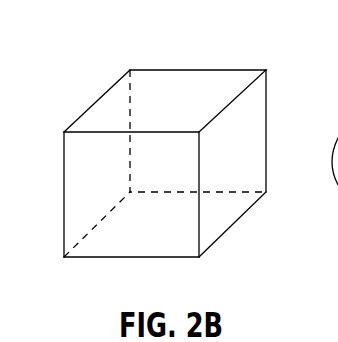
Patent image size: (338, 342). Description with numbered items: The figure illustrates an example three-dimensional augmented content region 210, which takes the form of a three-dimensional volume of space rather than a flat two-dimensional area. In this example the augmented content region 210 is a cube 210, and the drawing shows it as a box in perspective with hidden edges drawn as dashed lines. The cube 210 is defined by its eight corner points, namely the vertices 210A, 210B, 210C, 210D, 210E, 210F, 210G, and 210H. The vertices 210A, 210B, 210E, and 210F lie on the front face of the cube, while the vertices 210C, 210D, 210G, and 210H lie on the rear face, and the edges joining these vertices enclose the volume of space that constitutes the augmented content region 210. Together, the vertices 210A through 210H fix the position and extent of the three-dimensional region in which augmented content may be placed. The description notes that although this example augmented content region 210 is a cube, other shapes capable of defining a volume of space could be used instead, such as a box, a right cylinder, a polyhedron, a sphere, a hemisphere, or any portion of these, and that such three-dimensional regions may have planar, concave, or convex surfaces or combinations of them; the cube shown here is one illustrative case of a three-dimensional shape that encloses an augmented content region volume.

The 3D augmented content region 210 is at (208, 69).
The vertex 210A is at (55, 269).
The vertex 210B is at (213, 269).
The vertex 210C is at (290, 190).
The vertex 210D is at (153, 181).
The vertex 210E is at (40, 126).
The vertex 210F is at (224, 141).
The vertex 210G is at (290, 59).
The vertex 210H is at (130, 57).